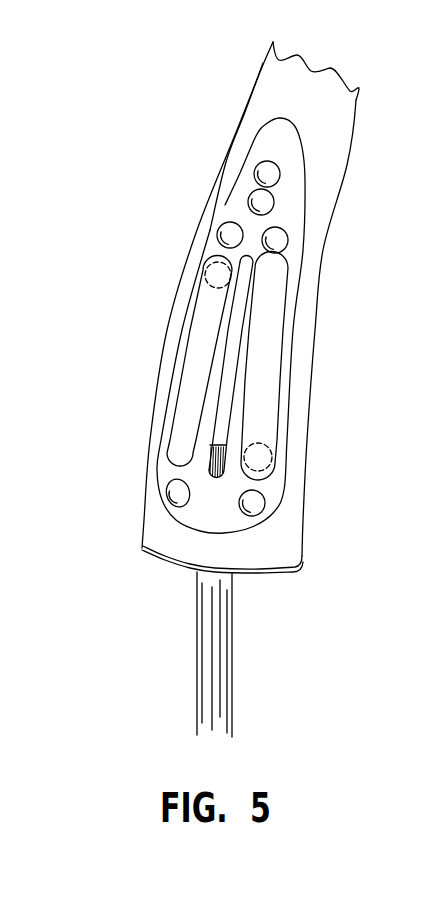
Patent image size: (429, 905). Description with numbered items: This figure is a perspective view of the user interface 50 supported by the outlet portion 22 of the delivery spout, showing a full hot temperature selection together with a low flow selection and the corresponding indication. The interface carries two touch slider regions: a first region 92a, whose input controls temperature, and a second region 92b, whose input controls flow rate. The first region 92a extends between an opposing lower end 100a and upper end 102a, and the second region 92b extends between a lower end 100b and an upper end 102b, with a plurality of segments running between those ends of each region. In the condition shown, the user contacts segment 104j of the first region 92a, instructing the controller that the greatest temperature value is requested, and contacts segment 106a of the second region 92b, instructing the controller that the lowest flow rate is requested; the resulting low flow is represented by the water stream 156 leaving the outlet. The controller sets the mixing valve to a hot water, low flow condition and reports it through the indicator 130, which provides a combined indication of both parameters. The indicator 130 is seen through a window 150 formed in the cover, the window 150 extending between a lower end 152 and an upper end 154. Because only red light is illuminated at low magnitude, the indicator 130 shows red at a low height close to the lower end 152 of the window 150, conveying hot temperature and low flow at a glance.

The outlet portion 22 is at (267, 93).
The user interface 50 is at (168, 172).
The first region 92a is at (180, 360).
The second region 92b is at (283, 372).
The lower end of first region 100a is at (168, 482).
The lower end of second region 100b is at (266, 484).
The upper end of first region 102a is at (213, 262).
The upper end of second region 102b is at (280, 267).
The segment of first region 104j is at (203, 270).
The segment of second region 106a is at (275, 448).
The indicator 130 is at (262, 258).
The window 150 is at (213, 408).
The lower end of window 152 is at (205, 475).
The upper end of window 154 is at (264, 218).
The water stream 156 is at (227, 648).